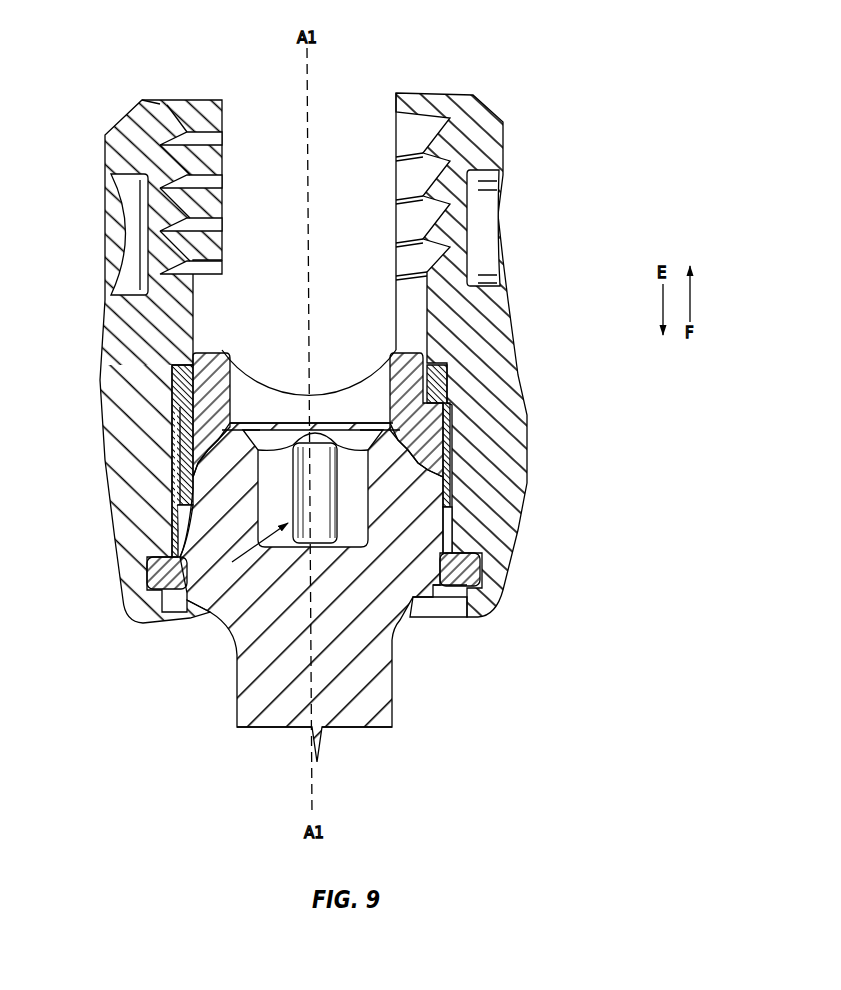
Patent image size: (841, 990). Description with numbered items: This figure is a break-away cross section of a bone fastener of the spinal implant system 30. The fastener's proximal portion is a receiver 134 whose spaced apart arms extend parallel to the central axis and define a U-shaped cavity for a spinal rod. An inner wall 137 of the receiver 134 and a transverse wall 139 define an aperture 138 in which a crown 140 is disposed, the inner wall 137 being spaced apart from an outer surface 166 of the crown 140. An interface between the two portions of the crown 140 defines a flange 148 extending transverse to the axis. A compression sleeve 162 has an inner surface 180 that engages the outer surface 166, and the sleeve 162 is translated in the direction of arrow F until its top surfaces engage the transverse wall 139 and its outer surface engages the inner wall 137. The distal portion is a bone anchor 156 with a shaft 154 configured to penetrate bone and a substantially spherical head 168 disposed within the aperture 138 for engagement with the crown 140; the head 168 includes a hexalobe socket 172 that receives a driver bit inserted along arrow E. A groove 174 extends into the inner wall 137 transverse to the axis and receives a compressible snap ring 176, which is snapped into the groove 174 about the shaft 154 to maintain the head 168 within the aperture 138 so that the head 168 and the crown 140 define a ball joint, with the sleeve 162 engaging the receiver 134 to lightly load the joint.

The system 30 is at (640, 449).
The receiver 134 is at (592, 387).
The inner wall 137 is at (178, 528).
The aperture 138 is at (444, 621).
The transverse wall 139 is at (443, 367).
The crown 140 is at (452, 447).
The flange 148 is at (450, 407).
The shaft 154 is at (240, 712).
The bone anchor 156 is at (198, 693).
The compression sleeve 162 is at (173, 392).
The outer surface 166 is at (177, 447).
The head 168 is at (177, 422).
The socket 172 is at (140, 622).
The groove 174 is at (145, 571).
The snap ring 176 is at (480, 560).
The inner surface 180 is at (177, 467).